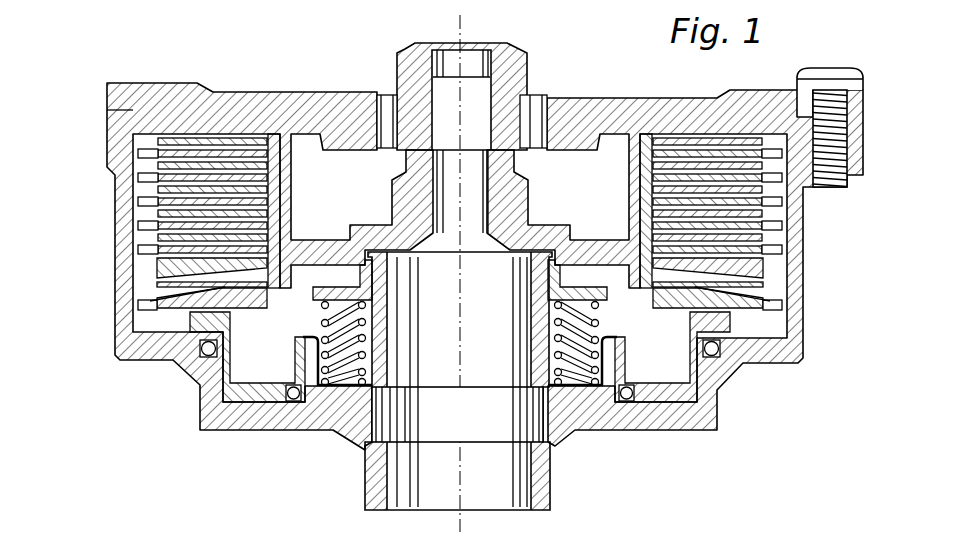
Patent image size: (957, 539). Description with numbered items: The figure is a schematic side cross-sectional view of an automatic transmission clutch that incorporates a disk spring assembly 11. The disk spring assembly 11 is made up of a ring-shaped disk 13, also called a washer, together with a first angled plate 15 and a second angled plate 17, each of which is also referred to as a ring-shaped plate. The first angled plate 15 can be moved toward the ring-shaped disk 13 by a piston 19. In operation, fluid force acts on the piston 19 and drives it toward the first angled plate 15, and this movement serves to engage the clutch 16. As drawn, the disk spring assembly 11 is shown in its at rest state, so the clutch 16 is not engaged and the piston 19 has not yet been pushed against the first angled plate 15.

The disk spring assembly 11 is at (108, 312).
The ring-shaped disk 13 is at (757, 293).
The first angled plate 15 is at (733, 312).
The clutch 16 is at (108, 232).
The second angled plate 17 is at (760, 273).
The piston 19 is at (684, 410).